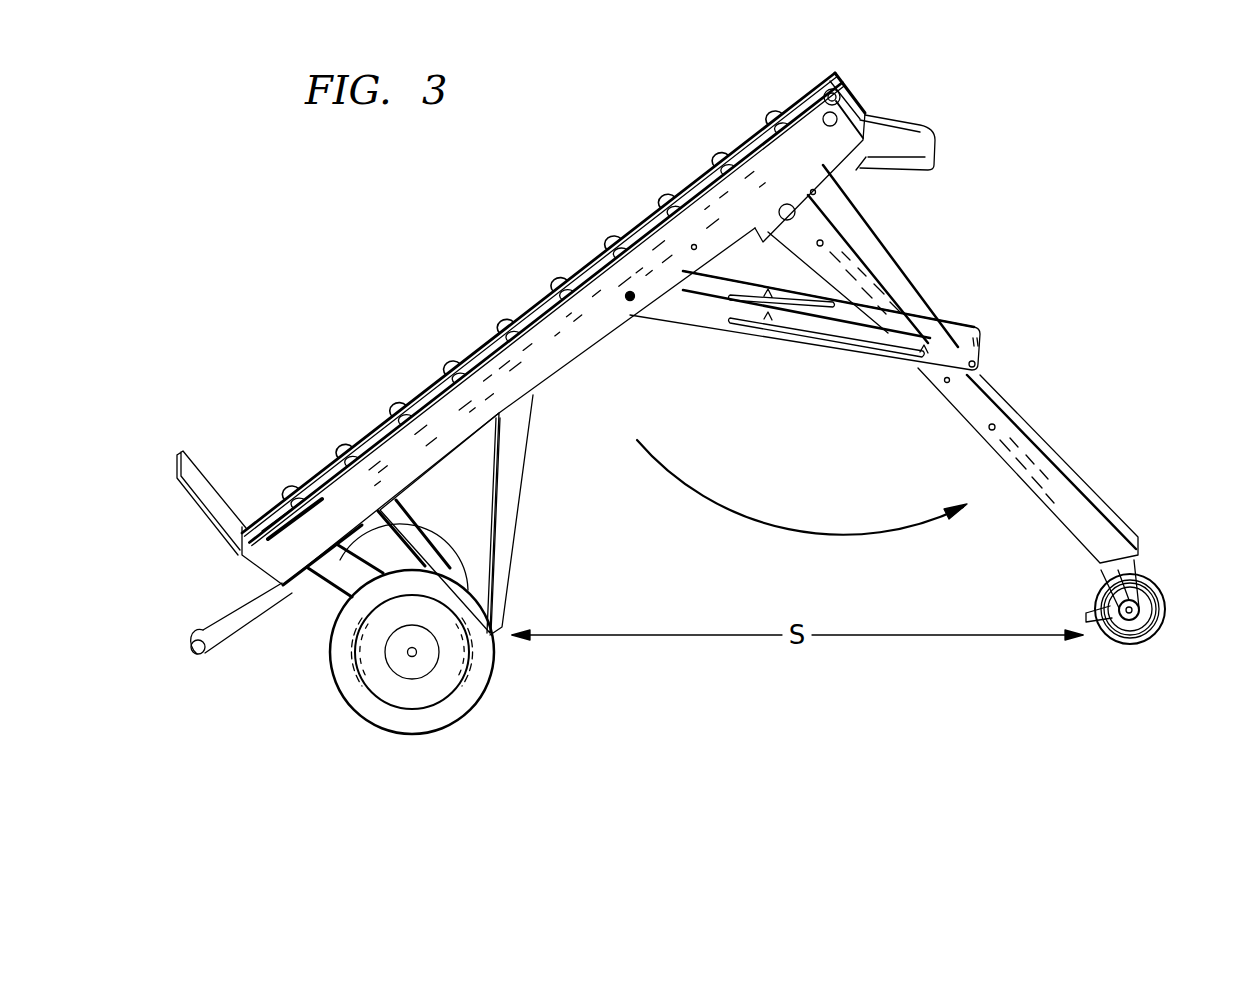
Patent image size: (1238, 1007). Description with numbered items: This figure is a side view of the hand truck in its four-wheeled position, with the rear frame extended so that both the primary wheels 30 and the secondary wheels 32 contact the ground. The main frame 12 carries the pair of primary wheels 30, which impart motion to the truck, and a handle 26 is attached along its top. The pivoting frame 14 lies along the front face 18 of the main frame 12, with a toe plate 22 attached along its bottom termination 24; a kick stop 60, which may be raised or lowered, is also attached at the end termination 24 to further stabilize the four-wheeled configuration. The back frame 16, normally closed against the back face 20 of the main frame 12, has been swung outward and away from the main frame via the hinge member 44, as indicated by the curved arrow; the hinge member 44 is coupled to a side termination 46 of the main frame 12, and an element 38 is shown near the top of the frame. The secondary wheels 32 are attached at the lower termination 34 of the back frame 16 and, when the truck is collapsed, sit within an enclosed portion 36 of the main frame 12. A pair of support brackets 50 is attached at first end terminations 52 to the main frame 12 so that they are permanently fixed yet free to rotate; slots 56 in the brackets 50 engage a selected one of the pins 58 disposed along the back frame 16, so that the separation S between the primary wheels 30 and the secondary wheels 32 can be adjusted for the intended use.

The main frame 12 is at (534, 365).
The pivoting frame 14 is at (474, 352).
The back frame 16 is at (886, 316).
The front face 18 is at (370, 432).
The back face 20 is at (594, 356).
The toe plate 22 is at (190, 456).
The bottom termination 24 is at (260, 516).
The handle 26 is at (938, 132).
The primary wheels 30 is at (416, 736).
The secondary wheels 32 is at (1156, 632).
The lower termination 34 is at (1100, 571).
The enclosed portion 36 is at (504, 535).
The pivot pin 38 is at (840, 104).
The second hinge member 44 is at (784, 206).
The side termination 46 is at (830, 185).
The support brackets 50 is at (712, 314).
The first end terminations 52 is at (627, 294).
The slots 56 is at (842, 348).
The pins 58 is at (996, 427).
The kick stop 60 is at (214, 632).